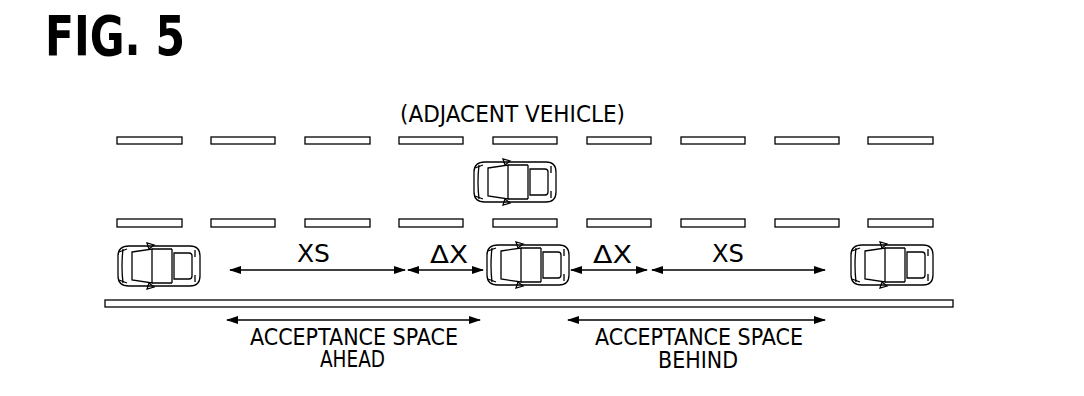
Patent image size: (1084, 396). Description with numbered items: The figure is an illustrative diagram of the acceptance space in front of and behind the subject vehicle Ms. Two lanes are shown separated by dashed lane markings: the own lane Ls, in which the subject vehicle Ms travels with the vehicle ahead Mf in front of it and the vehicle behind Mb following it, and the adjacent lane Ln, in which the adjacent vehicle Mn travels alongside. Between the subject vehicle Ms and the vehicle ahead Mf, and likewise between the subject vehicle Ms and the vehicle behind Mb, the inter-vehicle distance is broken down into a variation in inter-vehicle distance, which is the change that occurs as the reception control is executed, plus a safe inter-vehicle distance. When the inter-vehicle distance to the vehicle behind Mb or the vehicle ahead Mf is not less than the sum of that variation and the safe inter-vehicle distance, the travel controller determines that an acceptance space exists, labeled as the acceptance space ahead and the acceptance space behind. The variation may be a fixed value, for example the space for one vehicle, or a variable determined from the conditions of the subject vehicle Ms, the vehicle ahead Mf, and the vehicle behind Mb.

The adjacent lane Ln is at (100, 145).
The own lane Ls is at (100, 227).
The adjacent vehicle Mn is at (556, 186).
The vehicle ahead Mf is at (150, 286).
The subject vehicle Ms is at (522, 286).
The vehicle behind Mb is at (900, 286).